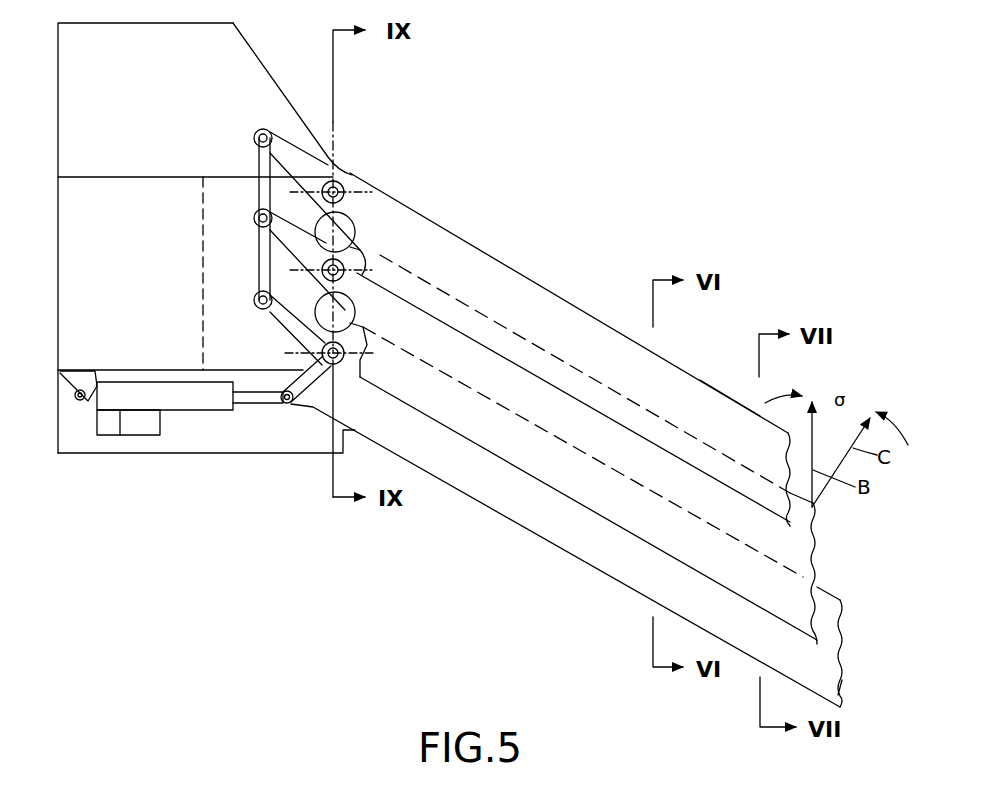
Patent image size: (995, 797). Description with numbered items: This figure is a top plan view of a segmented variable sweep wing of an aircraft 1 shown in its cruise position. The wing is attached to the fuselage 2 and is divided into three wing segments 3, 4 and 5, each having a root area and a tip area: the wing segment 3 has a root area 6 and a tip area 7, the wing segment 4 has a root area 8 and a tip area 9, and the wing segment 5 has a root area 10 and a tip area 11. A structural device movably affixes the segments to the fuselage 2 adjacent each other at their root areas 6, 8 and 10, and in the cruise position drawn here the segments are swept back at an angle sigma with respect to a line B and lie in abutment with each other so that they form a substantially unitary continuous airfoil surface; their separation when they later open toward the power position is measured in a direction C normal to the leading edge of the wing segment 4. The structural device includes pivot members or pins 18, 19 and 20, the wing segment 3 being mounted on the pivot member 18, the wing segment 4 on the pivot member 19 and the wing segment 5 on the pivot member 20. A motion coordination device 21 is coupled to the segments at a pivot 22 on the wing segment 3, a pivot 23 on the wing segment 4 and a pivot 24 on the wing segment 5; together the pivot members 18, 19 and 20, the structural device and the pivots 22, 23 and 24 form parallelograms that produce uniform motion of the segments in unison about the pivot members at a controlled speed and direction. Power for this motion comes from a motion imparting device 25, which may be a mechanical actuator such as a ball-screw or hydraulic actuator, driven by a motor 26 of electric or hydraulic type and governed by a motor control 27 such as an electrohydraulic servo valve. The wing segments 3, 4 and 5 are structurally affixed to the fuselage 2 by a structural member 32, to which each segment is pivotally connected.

The aircraft 1 is at (152, 98).
The fuselage 2 is at (246, 27).
The wing segment 3 is at (537, 300).
The wing segment 4 is at (555, 415).
The wing segment 5 is at (590, 550).
The root area 6 is at (437, 247).
The tip area 7 is at (702, 400).
The root area 8 is at (430, 325).
The tip area 9 is at (803, 608).
The root area 10 is at (377, 420).
The tip area 11 is at (846, 688).
The pivot member 18 is at (350, 175).
The pivot member 19 is at (352, 247).
The pivot member 20 is at (327, 342).
The motion coordination device 21 is at (257, 162).
The pivot 22 is at (267, 131).
The pivot 23 is at (256, 222).
The pivot 24 is at (256, 300).
The motion imparting device 25 is at (203, 405).
The motor 26 is at (142, 428).
The motor control 27 is at (103, 427).
The structural member 32 is at (118, 302).